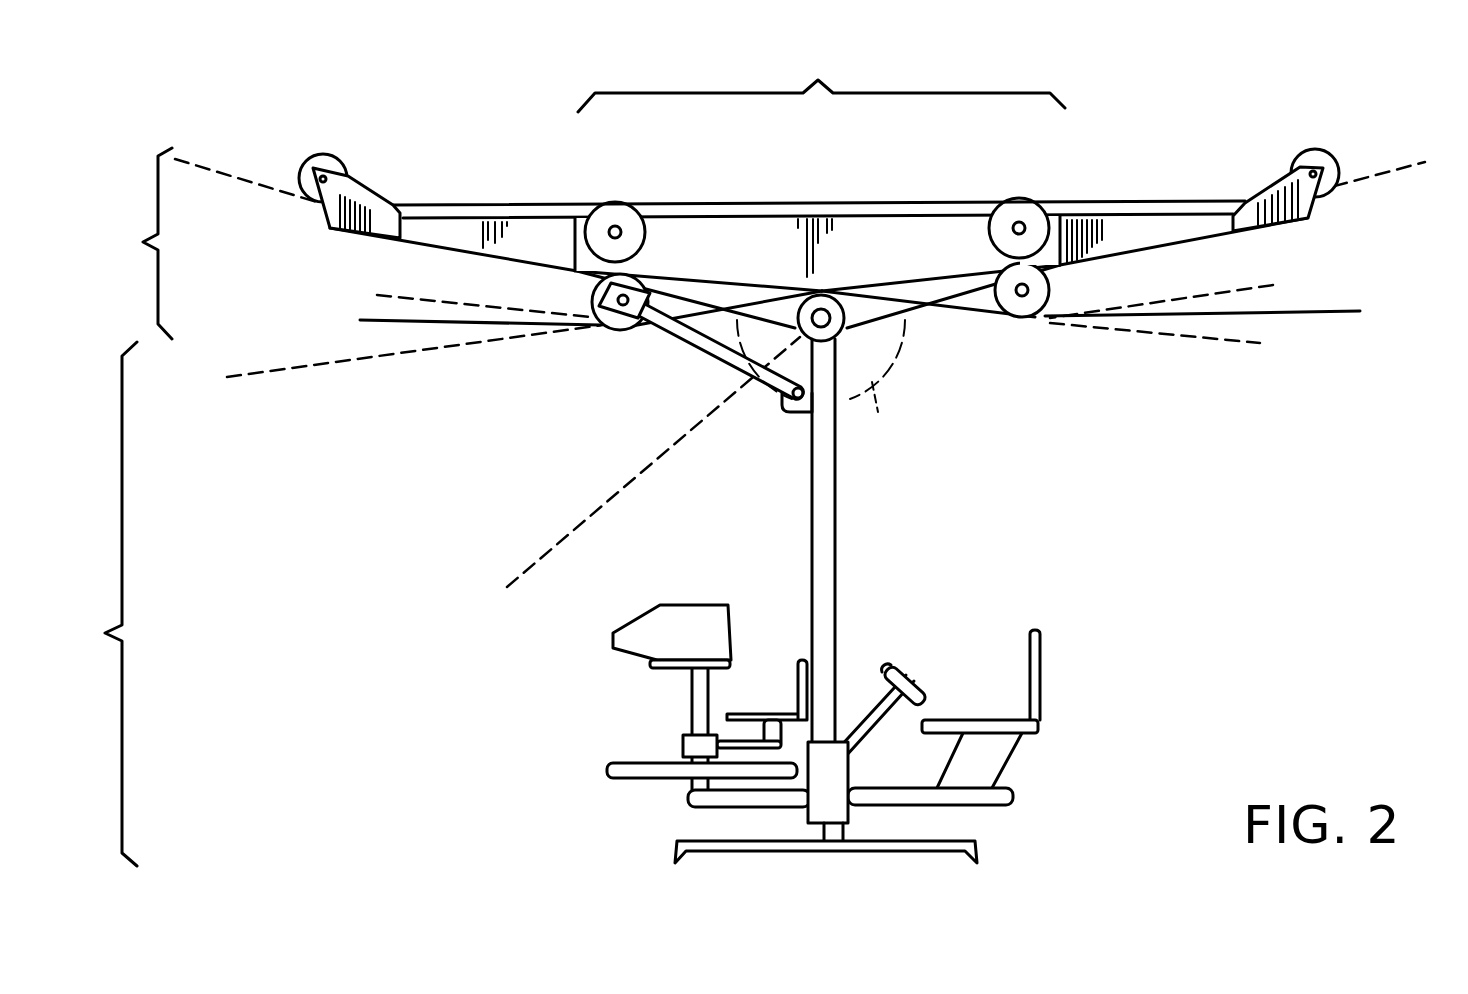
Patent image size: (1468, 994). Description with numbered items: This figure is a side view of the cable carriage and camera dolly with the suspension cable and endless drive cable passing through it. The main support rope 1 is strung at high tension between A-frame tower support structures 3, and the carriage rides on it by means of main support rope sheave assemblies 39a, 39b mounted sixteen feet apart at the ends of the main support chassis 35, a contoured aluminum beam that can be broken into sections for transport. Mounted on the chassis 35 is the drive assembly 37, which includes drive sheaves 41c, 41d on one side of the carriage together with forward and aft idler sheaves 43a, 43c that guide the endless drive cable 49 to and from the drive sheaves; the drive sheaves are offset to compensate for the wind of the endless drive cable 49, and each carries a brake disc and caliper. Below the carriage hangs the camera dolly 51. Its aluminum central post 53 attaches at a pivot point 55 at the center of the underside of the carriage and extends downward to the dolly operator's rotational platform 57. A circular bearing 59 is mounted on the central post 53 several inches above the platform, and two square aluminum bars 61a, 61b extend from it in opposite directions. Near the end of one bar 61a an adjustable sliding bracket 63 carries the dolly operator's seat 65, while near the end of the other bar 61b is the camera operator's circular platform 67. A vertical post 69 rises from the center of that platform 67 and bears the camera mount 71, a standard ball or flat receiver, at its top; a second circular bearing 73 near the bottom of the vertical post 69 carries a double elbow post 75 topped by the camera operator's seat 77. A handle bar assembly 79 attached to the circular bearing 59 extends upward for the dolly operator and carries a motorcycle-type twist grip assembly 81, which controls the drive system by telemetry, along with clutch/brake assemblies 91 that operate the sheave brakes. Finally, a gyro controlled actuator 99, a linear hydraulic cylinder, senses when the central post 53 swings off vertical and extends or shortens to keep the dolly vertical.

The main support rope 1 is at (191, 164).
The support structure 3 is at (140, 243).
The main support chassis 35 is at (525, 225).
The drive assembly 37 is at (821, 78).
The main support rope sheave assembly 39a is at (318, 154).
The main support rope sheave assembly 39b is at (1305, 148).
The drive sheave 41c is at (645, 205).
The drive sheave 41d is at (990, 204).
The idler sheave 43a is at (592, 294).
The idler sheave 43c is at (1049, 290).
The endless drive cable 49 is at (1253, 287).
The camera dolly 51 is at (102, 604).
The central post 53 is at (826, 510).
The pivot point 55 is at (843, 335).
The dolly operator's rotational platform 57 is at (975, 846).
The circular bearing 59 is at (808, 818).
The square aluminum bar 61a is at (1008, 807).
The square aluminum bar 61b is at (687, 793).
The adjustable sliding bracket 63 is at (1022, 740).
The dolly operator's seat 65 is at (1043, 640).
The camera operator's circular platform 67 is at (607, 770).
The vertical post 69 is at (692, 698).
The camera mount 71 is at (670, 672).
The second circular bearing 73 is at (683, 745).
The double elbow post 75 is at (780, 720).
The camera operator's seat 77 is at (798, 673).
The handle bar assembly 79 is at (877, 745).
The twist grip assembly 81 is at (928, 703).
The clutch/brake assembly 91 is at (885, 668).
The gyro controlled actuator 99 is at (688, 337).